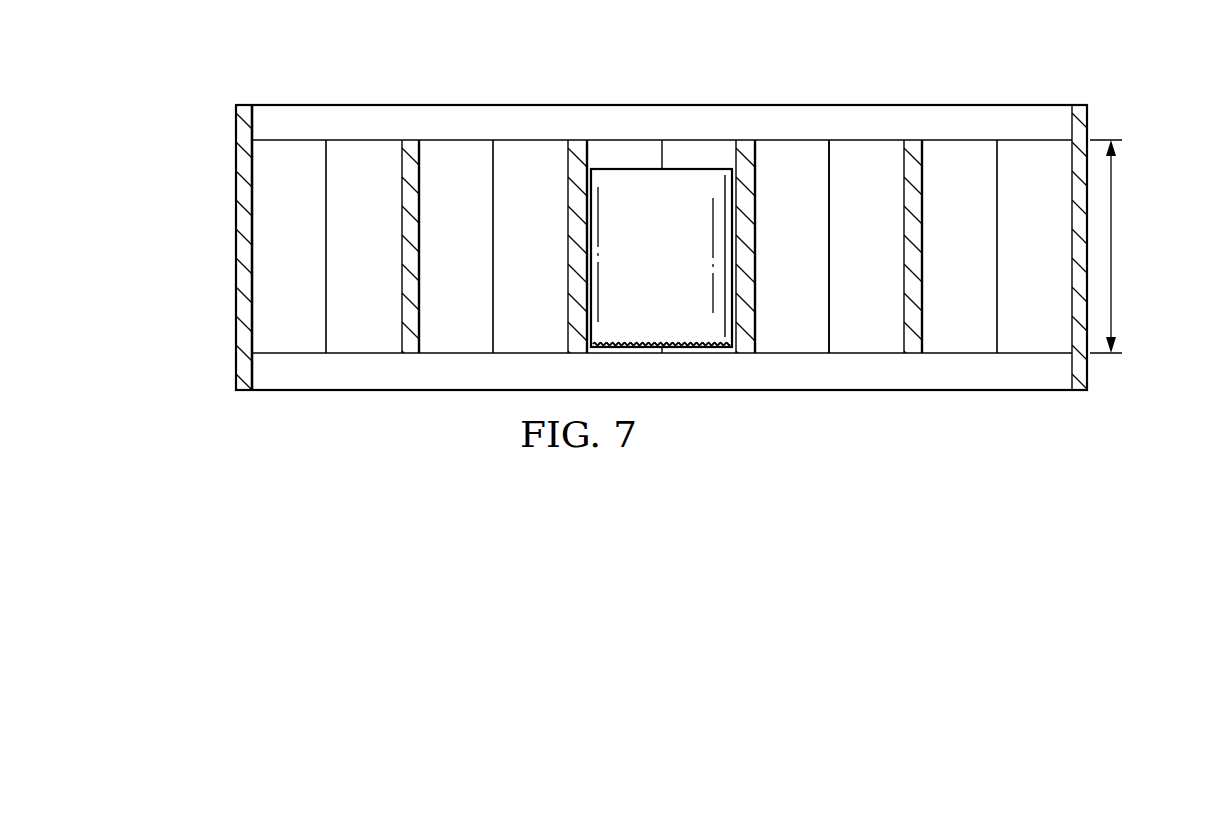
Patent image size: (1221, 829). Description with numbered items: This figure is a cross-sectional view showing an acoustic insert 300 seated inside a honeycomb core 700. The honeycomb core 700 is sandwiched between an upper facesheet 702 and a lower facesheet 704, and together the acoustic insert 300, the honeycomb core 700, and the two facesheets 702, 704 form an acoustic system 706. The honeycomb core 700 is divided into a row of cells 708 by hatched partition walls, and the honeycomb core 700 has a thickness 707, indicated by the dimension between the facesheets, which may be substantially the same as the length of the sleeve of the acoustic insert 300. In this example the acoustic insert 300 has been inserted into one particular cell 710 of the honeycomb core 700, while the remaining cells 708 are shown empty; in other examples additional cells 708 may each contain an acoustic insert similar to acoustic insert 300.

The honeycomb core 700 is at (535, 165).
The facesheet 702 is at (1022, 113).
The facesheet 704 is at (1020, 390).
The acoustic system 706 is at (200, 285).
The thickness 707 is at (1112, 247).
The cells 708 is at (870, 338).
The cell 710 is at (637, 162).
The acoustic insert 300 is at (690, 165).